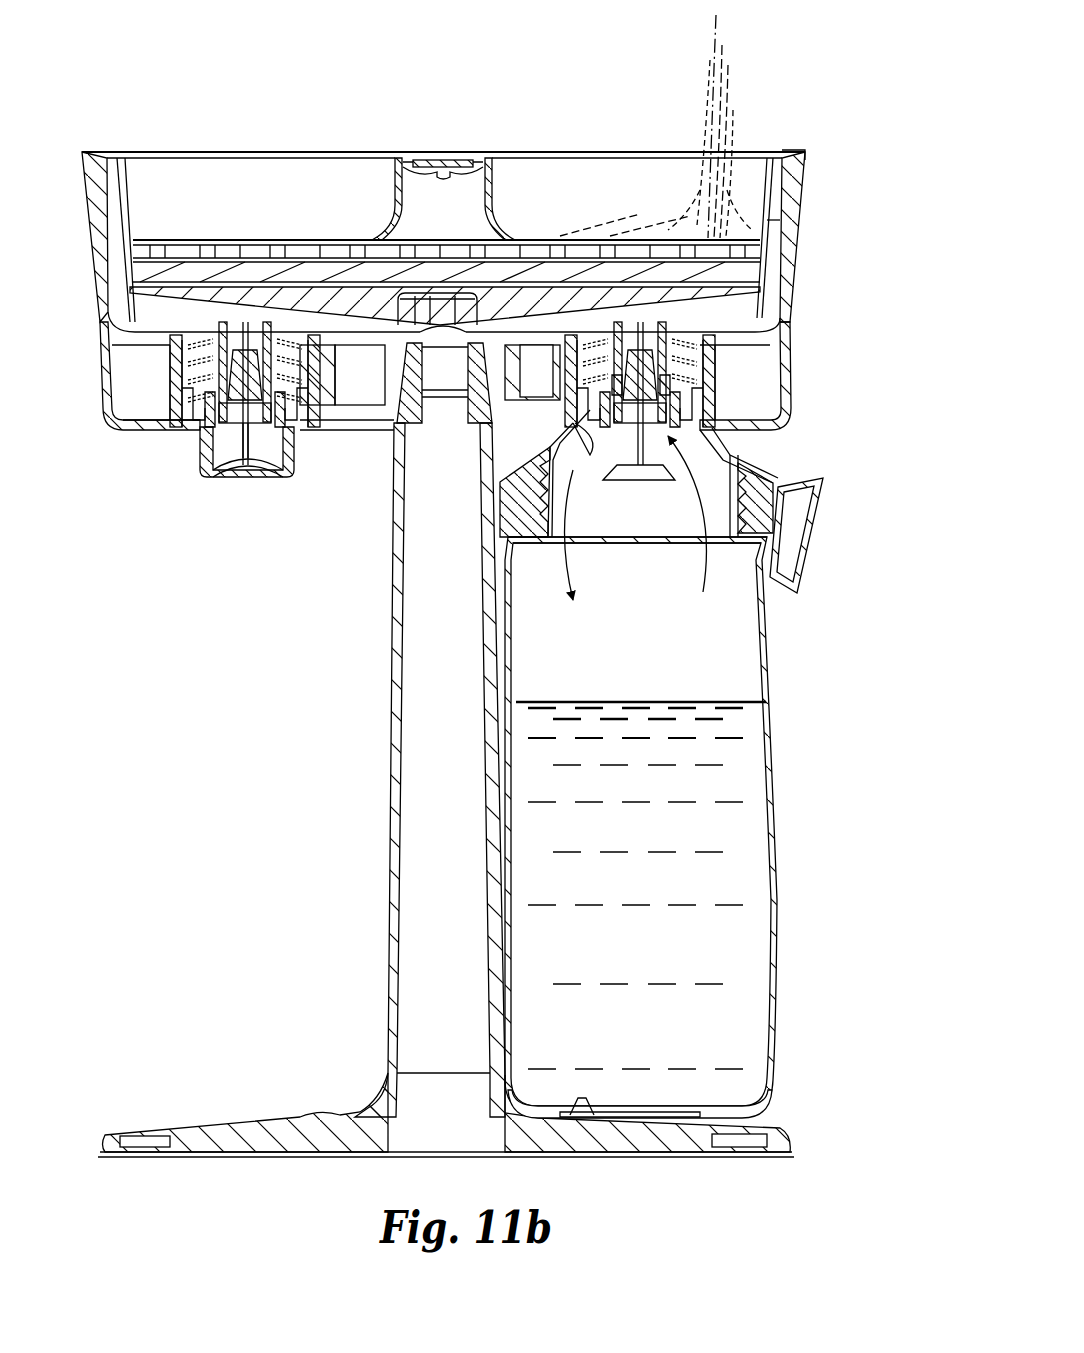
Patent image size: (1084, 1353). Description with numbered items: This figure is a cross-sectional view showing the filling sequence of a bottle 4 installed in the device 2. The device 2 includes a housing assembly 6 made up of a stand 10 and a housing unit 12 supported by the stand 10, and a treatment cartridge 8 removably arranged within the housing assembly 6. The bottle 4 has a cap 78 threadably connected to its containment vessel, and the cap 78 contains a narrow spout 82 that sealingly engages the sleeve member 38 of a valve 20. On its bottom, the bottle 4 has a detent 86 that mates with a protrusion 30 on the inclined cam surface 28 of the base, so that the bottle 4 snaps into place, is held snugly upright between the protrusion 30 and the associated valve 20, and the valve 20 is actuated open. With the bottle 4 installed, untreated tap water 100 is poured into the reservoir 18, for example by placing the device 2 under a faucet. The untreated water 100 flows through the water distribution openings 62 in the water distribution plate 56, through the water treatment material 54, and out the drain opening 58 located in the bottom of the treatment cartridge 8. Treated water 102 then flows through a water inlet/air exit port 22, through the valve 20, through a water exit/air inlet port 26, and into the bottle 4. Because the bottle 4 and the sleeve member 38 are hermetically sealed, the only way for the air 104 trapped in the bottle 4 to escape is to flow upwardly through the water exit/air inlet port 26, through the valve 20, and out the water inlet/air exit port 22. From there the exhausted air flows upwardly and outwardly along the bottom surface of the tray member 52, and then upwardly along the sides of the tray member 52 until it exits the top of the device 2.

The device 2 is at (802, 80).
The bottle 4 is at (771, 848).
The housing assembly 6 is at (130, 432).
The treatment cartridge 8 is at (776, 213).
The stand 10 is at (393, 776).
The housing unit 12 is at (800, 170).
The reservoir 18 is at (598, 200).
The valve 20 is at (198, 455).
The water inlet/air exit port 22 is at (660, 325).
The water exit/air inlet port 26 is at (590, 440).
The inclined cam surface 28 is at (771, 1130).
The protrusion 30 is at (588, 1113).
The sleeve member 38 is at (590, 415).
The tray member 52 is at (728, 305).
The water treatment material 54 is at (730, 268).
The water distribution plate 56 is at (540, 240).
The drain opening 58 is at (430, 300).
The water distribution openings 62 is at (585, 237).
The cap 78 is at (762, 480).
The spout 82 is at (690, 392).
The detent 86 is at (650, 1118).
The untreated tap water 100 is at (716, 80).
The treated water 102 is at (578, 567).
The air 104 is at (700, 572).